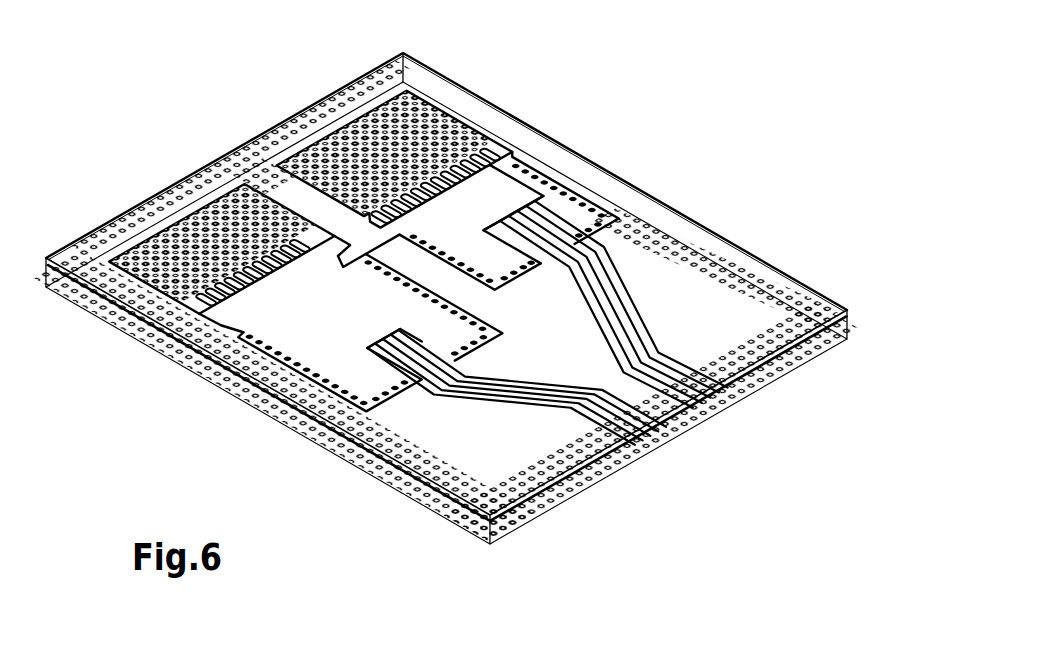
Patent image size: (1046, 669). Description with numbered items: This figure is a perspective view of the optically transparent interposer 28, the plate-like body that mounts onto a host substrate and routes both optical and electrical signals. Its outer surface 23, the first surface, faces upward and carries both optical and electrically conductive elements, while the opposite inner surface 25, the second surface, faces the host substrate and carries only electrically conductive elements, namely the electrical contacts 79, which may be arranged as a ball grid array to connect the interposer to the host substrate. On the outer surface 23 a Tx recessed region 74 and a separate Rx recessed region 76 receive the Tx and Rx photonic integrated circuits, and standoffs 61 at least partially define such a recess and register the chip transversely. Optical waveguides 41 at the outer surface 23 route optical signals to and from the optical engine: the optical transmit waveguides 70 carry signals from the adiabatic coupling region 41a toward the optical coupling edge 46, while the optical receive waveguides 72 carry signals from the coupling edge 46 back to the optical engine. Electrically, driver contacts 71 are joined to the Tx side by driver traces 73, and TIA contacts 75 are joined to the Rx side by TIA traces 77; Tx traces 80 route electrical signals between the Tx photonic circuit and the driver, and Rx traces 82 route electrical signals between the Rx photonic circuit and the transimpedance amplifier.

The optically transparent interposer 28 is at (216, 96).
The outer surface 23 is at (422, 423).
The optical coupling edge 46 is at (720, 397).
The inner surface 25 is at (160, 353).
The electrical contacts 79 is at (275, 408).
The optical transmit waveguides 70 is at (600, 470).
The Tx recessed region 74 is at (236, 212).
The driver contacts 71 is at (190, 288).
The TIA contacts 75 is at (363, 163).
The TIA traces 77 is at (468, 207).
The standoffs 61 is at (398, 255).
The driver traces 73 is at (328, 240).
The Rx recessed region 76 is at (443, 257).
The Rx traces 82 is at (540, 232).
The Tx traces 80 is at (295, 358).
The optical waveguides 41 is at (612, 319).
The optical receive waveguides 72 is at (608, 285).
The adiabatic coupling region 41a is at (575, 210).